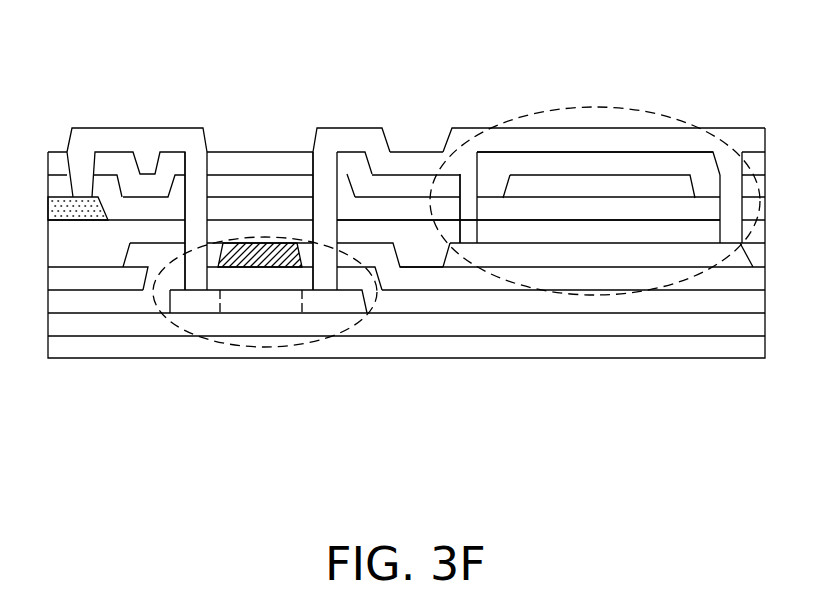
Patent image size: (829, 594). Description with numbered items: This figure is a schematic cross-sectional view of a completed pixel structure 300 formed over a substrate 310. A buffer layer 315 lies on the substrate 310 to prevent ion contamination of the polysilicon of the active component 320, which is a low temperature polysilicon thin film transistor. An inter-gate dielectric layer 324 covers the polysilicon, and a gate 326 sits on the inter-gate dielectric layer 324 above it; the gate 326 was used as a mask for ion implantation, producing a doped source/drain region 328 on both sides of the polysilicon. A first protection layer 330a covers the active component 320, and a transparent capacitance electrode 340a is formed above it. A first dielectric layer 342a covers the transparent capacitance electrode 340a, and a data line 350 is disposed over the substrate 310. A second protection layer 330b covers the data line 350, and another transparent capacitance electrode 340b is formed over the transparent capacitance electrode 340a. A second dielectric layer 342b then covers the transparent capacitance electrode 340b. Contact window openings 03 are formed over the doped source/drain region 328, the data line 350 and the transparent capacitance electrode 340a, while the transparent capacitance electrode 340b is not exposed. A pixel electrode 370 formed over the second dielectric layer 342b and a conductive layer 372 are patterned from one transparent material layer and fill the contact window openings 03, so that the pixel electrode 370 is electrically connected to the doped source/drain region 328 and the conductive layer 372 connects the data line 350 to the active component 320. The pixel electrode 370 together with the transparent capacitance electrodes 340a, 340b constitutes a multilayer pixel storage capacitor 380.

The pixel structure 300 is at (108, 503).
The substrate 310 is at (752, 348).
The buffer layer 315 is at (710, 325).
The inter-gate dielectric layer 324 is at (680, 303).
The gate 326 is at (250, 257).
The doped source/drain region 328 is at (208, 300).
The active component 320 is at (352, 322).
The first protection layer 330a is at (635, 275).
The second protection layer 330b is at (498, 213).
The transparent capacitance electrode 340a is at (560, 255).
The transparent capacitance electrode 340b is at (607, 187).
The first dielectric layer 342a is at (597, 227).
The second dielectric layer 342b is at (543, 168).
The data line 350 is at (67, 207).
The pixel electrode 370 is at (512, 143).
The conductive layer 372 is at (145, 147).
The multilayer pixel storage capacitor 380 is at (668, 117).
The contact window openings 03 is at (78, 172).